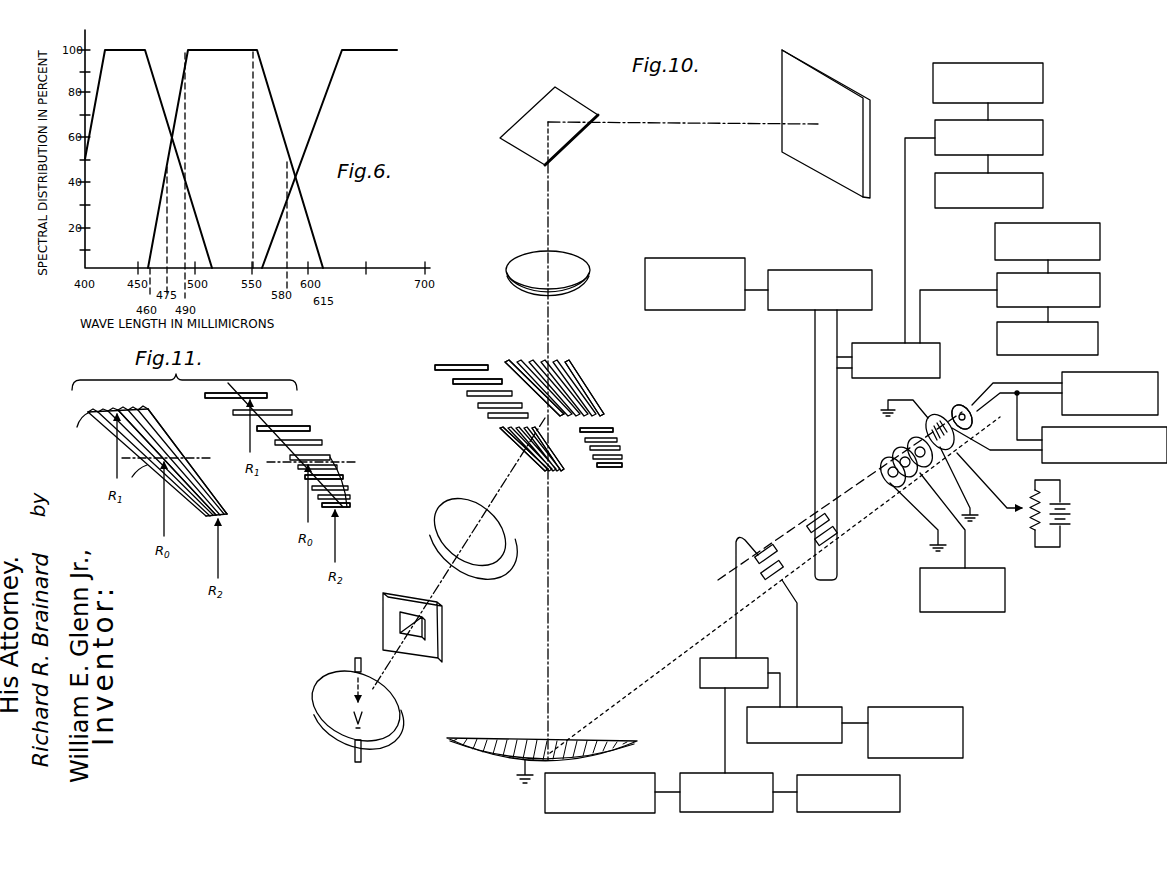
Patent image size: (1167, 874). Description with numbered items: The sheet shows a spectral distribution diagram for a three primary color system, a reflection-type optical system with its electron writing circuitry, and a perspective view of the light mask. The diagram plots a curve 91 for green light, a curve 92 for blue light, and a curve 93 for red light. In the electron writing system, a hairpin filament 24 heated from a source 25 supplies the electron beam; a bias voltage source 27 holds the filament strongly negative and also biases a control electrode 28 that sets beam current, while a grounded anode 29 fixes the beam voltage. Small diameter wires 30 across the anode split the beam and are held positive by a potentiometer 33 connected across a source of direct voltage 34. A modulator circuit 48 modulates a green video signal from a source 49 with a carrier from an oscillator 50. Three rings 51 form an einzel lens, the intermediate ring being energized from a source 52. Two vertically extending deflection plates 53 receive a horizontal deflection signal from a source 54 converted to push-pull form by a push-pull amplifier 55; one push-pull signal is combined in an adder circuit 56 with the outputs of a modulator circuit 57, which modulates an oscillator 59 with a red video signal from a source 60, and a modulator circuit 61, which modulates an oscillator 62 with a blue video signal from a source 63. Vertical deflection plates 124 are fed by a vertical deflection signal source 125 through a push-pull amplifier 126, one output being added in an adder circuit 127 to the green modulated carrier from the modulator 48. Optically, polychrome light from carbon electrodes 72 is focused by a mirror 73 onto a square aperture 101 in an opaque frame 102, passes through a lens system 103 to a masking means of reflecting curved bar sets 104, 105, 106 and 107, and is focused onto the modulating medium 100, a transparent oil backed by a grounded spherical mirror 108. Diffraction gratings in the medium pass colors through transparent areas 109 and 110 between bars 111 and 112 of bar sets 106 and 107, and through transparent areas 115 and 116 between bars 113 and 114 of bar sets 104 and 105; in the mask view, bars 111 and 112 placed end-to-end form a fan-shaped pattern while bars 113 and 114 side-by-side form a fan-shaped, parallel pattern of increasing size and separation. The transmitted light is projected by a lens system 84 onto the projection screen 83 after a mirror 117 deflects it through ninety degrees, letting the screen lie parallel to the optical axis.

In FIG. 6, the curve for green light 91 is at (221, 50).
In FIG. 6, the curve for blue light 92 is at (134, 50).
In FIG. 6, the curve for red light 93 is at (367, 50).
In FIG. 10, the hairpin filament 24 is at (972, 403).
In FIG. 10, the filament energy source 25 is at (1127, 370).
In FIG. 10, the bias voltage source 27 is at (1113, 465).
In FIG. 10, the control electrode 28 is at (958, 403).
In FIG. 10, the anode 29 is at (936, 417).
In FIG. 10, the small diameter wires 30 is at (985, 480).
In FIG. 10, the potentiometer 33 is at (1032, 498).
In FIG. 10, the source of direct voltage 34 is at (1070, 522).
In FIG. 10, the modulator circuit 48 is at (710, 775).
In FIG. 10, the green video signal source 49 is at (644, 773).
In FIG. 10, the oscillator 50 is at (859, 775).
In FIG. 10, the rings 51 is at (903, 441).
In FIG. 10, the focusing voltage source 52 is at (1005, 590).
In FIG. 10, the deflection plates 53 is at (807, 521).
In FIG. 10, the deflection signal source 54 is at (718, 257).
In FIG. 10, the push-pull amplifier 55 is at (825, 270).
In FIG. 10, the adder circuit 56 is at (930, 343).
In FIG. 10, the modulator circuit 57 is at (1043, 137).
In FIG. 10, the oscillator 59 is at (1043, 188).
In FIG. 10, the red video signal source 60 is at (1043, 78).
In FIG. 10, the modulator circuit 61 is at (1100, 288).
In FIG. 10, the oscillator 62 is at (1098, 336).
In FIG. 10, the blue video signal source 63 is at (1100, 237).
In FIG. 10, the carbon electrodes 72 is at (363, 704).
In FIG. 10, the mirror 73 is at (322, 697).
In FIG. 10, the projection screen 83 is at (820, 155).
In FIG. 10, the lens system 84 is at (570, 258).
In FIG. 10, the modulating medium 100 is at (492, 740).
In FIG. 10, the square aperture 101 is at (417, 633).
In FIG. 10, the opaque frame 102 is at (430, 649).
In FIG. 10, the lens system 103 is at (481, 558).
In FIG. 11, the bar set 104 is at (338, 412).
In FIG. 10, the bar set 104 is at (455, 407).
In FIG. 11, the bar set 105 is at (395, 500).
In FIG. 10, the bar set 105 is at (658, 449).
In FIG. 11, the bar set 106 is at (98, 448).
In FIG. 10, the bar set 106 is at (618, 387).
In FIG. 11, the bar set 107 is at (157, 502).
In FIG. 10, the bar set 107 is at (498, 465).
In FIG. 10, the spherical mirror 108 is at (488, 753).
In FIG. 11, the transparent area 109 is at (135, 404).
In FIG. 10, the transparent area 109 is at (518, 360).
In FIG. 11, the transparent area 110 is at (192, 467).
In FIG. 10, the transparent area 110 is at (500, 430).
In FIG. 11, the bars 111 is at (158, 428).
In FIG. 10, the bars 111 is at (573, 370).
In FIG. 11, the bars 112 is at (182, 500).
In FIG. 10, the bars 112 is at (532, 463).
In FIG. 11, the bars 113 is at (308, 428).
In FIG. 10, the bars 113 is at (462, 364).
In FIG. 11, the bars 114 is at (343, 508).
In FIG. 10, the bars 114 is at (613, 468).
In FIG. 11, the transparent area 115 is at (233, 410).
In FIG. 10, the transparent area 115 is at (445, 377).
In FIG. 11, the transparent area 116 is at (340, 472).
In FIG. 10, the transparent area 116 is at (613, 435).
In FIG. 10, the mirror 117 is at (535, 107).
In FIG. 10, the deflection plates 124 is at (767, 545).
In FIG. 10, the vertical deflection signal source 125 is at (935, 705).
In FIG. 10, the push-pull amplifier 126 is at (833, 705).
In FIG. 10, the adder circuit 127 is at (700, 675).